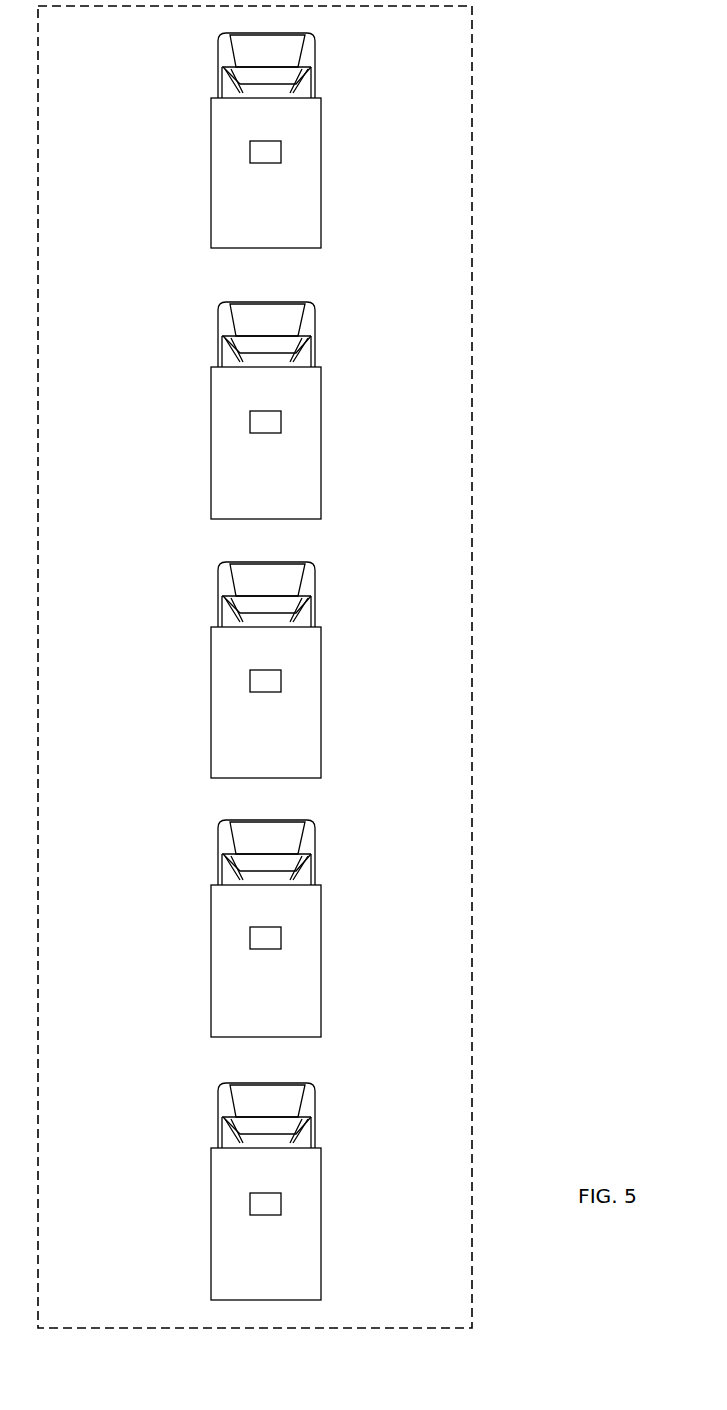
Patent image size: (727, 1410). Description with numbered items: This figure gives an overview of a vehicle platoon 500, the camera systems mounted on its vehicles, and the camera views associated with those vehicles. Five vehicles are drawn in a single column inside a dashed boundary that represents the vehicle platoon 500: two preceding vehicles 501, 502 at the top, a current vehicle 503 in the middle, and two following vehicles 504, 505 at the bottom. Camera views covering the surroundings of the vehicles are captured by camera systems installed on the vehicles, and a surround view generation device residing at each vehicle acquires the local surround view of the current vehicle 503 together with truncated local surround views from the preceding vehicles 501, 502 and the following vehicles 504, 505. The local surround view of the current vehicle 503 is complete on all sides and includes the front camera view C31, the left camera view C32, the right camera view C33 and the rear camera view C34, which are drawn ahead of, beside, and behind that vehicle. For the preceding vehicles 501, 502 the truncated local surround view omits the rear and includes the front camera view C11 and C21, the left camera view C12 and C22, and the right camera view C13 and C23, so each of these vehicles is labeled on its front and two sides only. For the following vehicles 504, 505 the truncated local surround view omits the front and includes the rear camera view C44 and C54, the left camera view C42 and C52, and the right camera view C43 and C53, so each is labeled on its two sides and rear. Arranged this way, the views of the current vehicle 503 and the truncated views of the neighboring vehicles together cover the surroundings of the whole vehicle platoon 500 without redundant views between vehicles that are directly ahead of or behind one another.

The vehicle platoon 500 is at (102, 1290).
The preceding vehicle 501 is at (282, 236).
The preceding vehicle 502 is at (282, 505).
The current vehicle 503 is at (282, 770).
The following vehicle 504 is at (282, 1028).
The following vehicle 505 is at (282, 1295).
The front camera view C11 is at (260, 20).
The left camera view C12 is at (136, 128).
The right camera view C13 is at (376, 128).
The front camera view C21 is at (260, 285).
The left camera view C22 is at (141, 405).
The right camera view C23 is at (373, 405).
The front camera view C31 is at (259, 546).
The left camera view C32 is at (146, 655).
The right camera view C33 is at (366, 655).
The rear camera view C34 is at (261, 788).
The left camera view C42 is at (146, 915).
The right camera view C43 is at (373, 915).
The rear camera view C44 is at (271, 1050).
The left camera view C52 is at (147, 1181).
The right camera view C53 is at (371, 1180).
The rear camera view C54 is at (263, 1313).